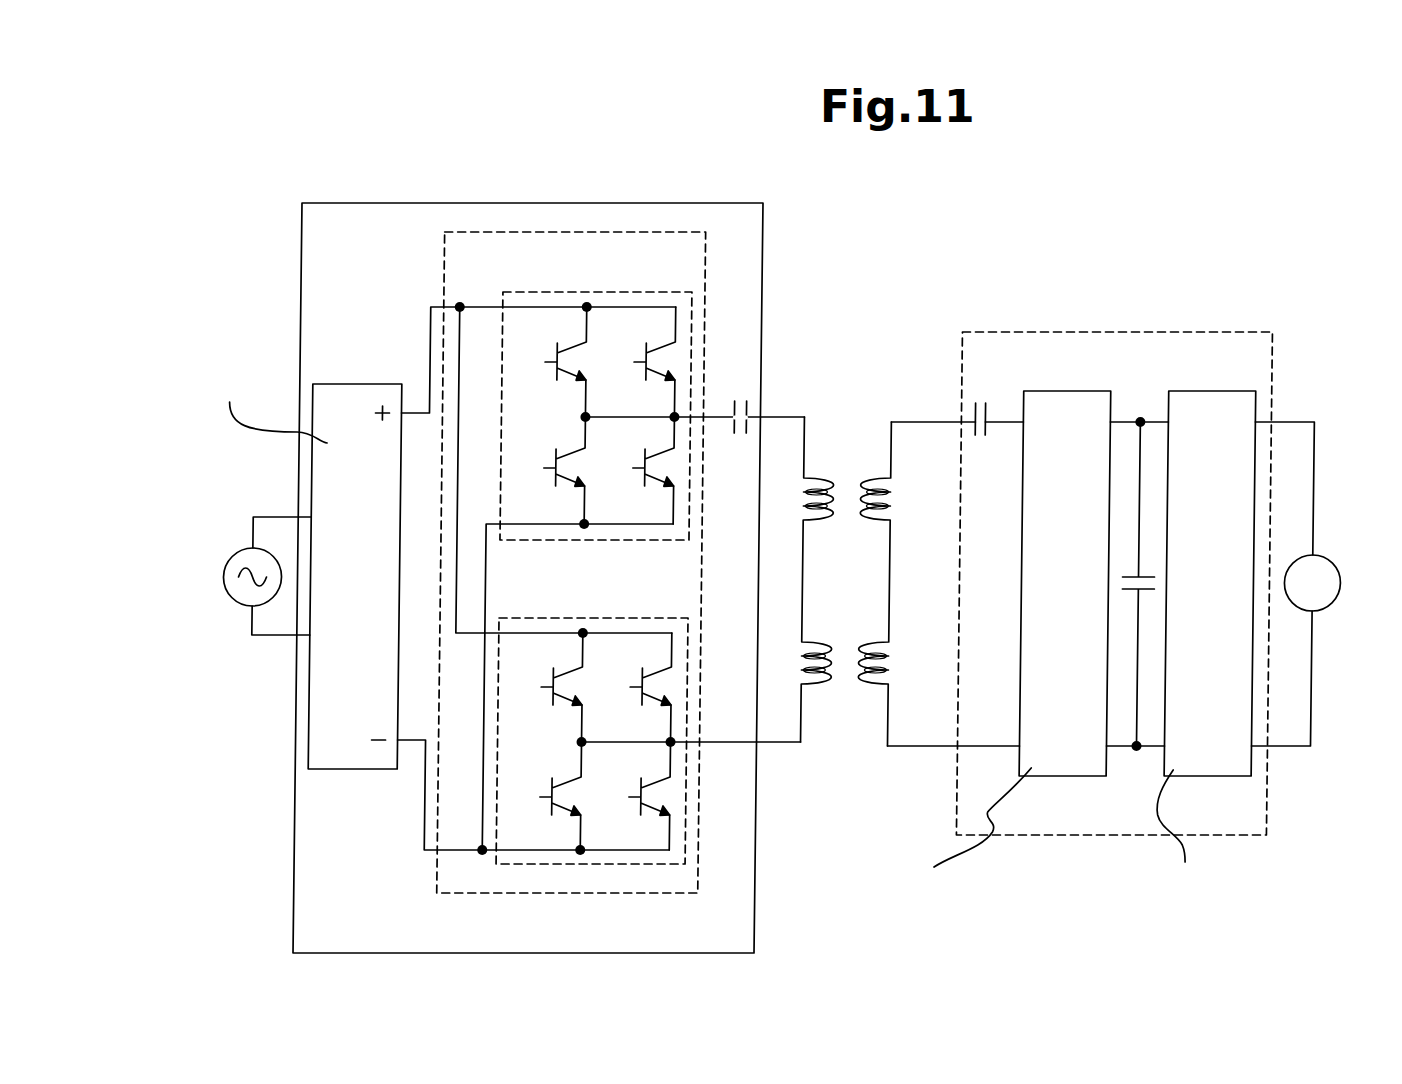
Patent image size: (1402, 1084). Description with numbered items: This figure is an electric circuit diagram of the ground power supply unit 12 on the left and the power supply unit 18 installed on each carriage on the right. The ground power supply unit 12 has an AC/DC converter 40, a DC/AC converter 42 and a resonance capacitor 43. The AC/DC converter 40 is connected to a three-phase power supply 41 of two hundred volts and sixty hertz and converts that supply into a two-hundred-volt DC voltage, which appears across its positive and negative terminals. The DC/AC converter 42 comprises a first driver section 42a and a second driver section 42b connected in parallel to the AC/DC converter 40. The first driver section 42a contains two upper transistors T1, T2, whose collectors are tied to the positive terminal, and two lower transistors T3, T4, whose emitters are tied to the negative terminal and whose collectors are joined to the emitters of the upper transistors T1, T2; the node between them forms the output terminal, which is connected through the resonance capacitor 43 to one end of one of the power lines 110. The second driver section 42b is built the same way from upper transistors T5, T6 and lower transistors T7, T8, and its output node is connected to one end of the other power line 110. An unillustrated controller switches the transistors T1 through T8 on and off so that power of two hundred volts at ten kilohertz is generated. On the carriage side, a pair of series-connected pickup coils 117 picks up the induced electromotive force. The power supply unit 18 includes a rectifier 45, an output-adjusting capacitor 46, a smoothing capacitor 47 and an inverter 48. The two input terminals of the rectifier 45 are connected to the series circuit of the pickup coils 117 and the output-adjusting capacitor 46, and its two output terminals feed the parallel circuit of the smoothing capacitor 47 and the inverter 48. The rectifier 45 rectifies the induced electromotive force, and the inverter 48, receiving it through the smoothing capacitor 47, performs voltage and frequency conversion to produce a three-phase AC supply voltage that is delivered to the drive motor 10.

The ground power supply unit 12 is at (635, 204).
The AC/DC converter 40 is at (355, 769).
The 3-phase power supply 41 is at (244, 548).
The DC/AC converter 42 is at (503, 897).
The first driver section 42a is at (612, 291).
The second driver section 42b is at (600, 617).
The upper transistor T1 is at (572, 343).
The upper transistor T2 is at (662, 343).
The lower transistor T3 is at (572, 453).
The lower transistor T4 is at (662, 453).
The upper transistor T5 is at (580, 668).
The upper transistor T6 is at (663, 665).
The lower transistor T7 is at (580, 778).
The lower transistor T8 is at (663, 772).
The resonance capacitor 43 is at (735, 401).
The power line 110 is at (790, 412).
The pickup coil 117 is at (889, 491).
The power supply unit 18 is at (1201, 332).
The output-adjusting capacitor 46 is at (988, 405).
The rectifier 45 is at (1060, 776).
The smoothing capacitor 47 is at (1133, 575).
The inverter 48 is at (1205, 776).
The drive motor 10 is at (1325, 565).